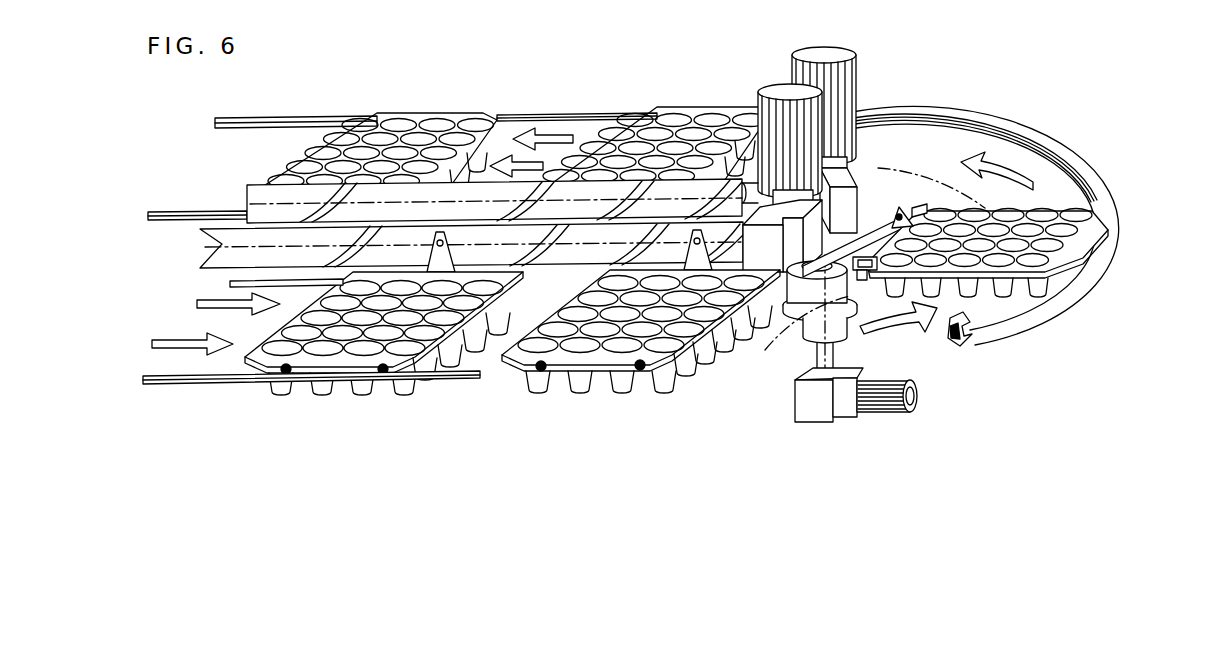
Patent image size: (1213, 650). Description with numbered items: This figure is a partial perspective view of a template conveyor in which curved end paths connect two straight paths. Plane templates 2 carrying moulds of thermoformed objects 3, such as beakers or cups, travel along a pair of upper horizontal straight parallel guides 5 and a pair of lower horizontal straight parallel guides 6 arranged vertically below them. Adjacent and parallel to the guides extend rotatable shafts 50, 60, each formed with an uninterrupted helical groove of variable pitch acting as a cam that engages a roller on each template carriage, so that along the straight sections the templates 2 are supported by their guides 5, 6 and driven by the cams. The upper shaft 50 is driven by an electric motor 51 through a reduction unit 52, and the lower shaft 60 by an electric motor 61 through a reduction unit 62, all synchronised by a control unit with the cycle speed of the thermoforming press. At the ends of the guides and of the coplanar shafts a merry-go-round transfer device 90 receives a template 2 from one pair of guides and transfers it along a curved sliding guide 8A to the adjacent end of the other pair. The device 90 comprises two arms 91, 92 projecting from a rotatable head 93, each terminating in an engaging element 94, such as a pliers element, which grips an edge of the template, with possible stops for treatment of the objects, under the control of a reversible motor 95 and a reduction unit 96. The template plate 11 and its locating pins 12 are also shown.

The plane template 2 is at (1037, 205).
The thermoformed object 3 is at (617, 380).
The upper horizontal straight parallel guide 5 is at (287, 130).
The lower horizontal straight parallel guide 6 is at (230, 286).
The curved sliding guide 8A is at (1097, 248).
The tray plate 11 is at (511, 360).
The locating pin 12 is at (542, 393).
The shaft 50 is at (467, 193).
The electric motor 51 is at (852, 83).
The reduction unit 52 is at (847, 193).
The shaft 60 is at (222, 240).
The electric motor 61 is at (783, 88).
The reduction unit 62 is at (757, 255).
The merry-go-round transfer device 90 is at (812, 351).
The arm 91 is at (867, 248).
The arm 92 is at (838, 288).
The rotatable head 93 is at (807, 300).
The engaging element 94 is at (917, 217).
The reversible motor 95 is at (887, 410).
The reduction unit 96 is at (822, 410).